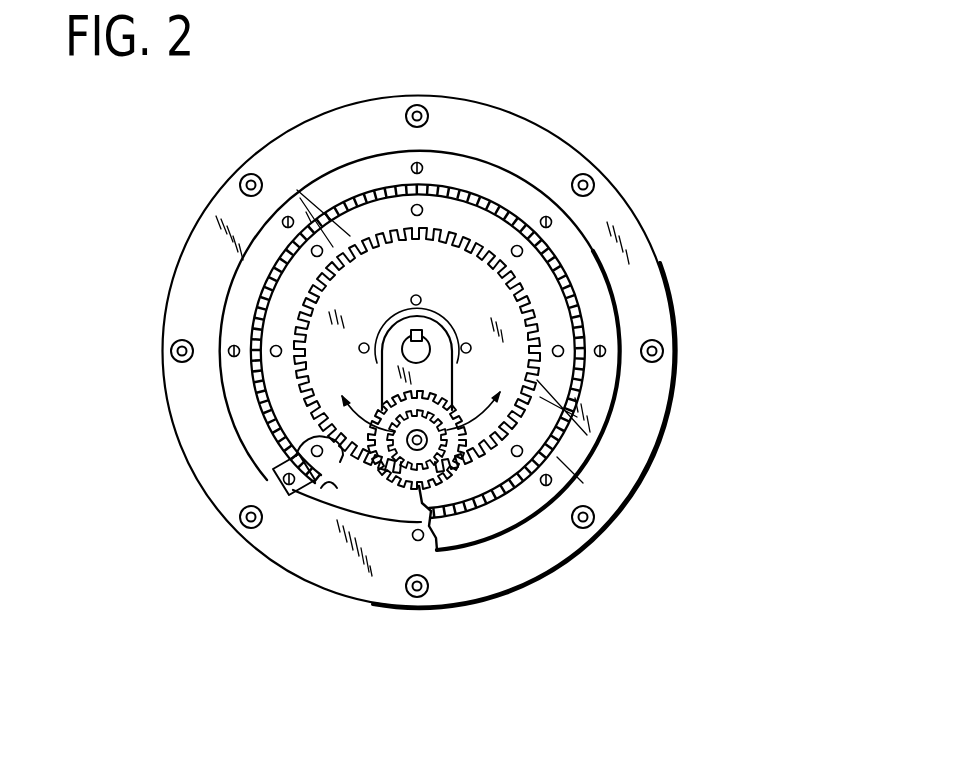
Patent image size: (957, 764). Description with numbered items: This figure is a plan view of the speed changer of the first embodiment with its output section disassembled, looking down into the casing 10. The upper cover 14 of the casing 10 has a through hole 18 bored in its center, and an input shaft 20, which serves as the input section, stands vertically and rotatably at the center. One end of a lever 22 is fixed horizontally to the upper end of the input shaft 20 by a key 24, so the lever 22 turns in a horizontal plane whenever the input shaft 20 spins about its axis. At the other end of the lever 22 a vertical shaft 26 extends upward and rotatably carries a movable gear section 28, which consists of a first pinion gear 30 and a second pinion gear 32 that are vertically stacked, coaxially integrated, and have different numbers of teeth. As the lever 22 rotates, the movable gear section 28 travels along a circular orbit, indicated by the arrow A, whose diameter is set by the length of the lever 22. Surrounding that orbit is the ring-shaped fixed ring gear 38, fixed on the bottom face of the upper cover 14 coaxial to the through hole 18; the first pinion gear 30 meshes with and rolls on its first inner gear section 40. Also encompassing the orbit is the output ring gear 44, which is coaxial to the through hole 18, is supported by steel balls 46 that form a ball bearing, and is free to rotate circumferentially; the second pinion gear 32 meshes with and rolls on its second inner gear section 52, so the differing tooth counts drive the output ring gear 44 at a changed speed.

The casing 10 is at (594, 162).
The upper cover 14 is at (194, 425).
The through hole 18 is at (333, 485).
The input shaft 20 is at (418, 348).
The lever 22 is at (430, 367).
The key 24 is at (422, 333).
The vertical shaft 26 is at (410, 472).
The movable gear section 28 is at (383, 407).
The first pinion gear 30 is at (470, 450).
The second pinion gear 32 is at (400, 462).
The fixed ring gear 38 is at (417, 509).
The first inner gear section 40 is at (273, 470).
The output ring gear 44 is at (455, 220).
The steel balls 46 is at (400, 182).
The second inner gear section 52 is at (468, 248).
The arrow A is at (502, 417).